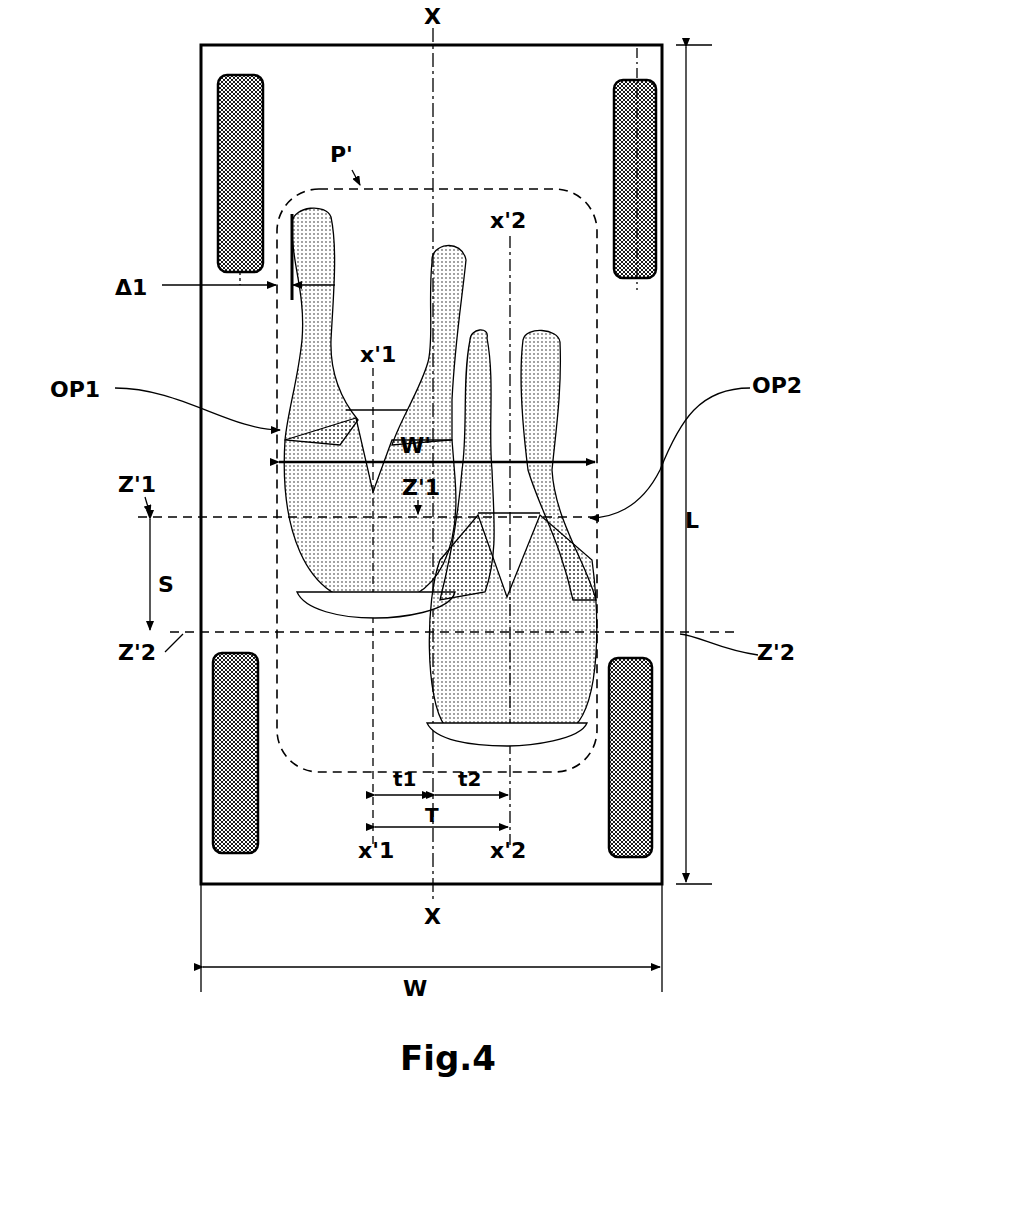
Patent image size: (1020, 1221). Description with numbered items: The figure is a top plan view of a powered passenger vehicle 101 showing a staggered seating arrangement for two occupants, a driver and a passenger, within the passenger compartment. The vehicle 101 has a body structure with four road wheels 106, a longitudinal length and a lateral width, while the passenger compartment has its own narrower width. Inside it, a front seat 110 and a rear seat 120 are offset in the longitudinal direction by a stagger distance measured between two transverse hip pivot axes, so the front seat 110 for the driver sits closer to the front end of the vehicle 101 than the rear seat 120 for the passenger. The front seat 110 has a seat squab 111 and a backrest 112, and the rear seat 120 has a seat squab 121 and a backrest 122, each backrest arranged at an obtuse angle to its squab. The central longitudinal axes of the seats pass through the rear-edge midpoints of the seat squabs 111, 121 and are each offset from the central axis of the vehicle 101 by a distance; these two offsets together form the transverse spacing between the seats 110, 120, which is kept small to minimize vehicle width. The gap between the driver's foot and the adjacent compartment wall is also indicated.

The powered passenger vehicle 101 is at (196, 123).
The road wheels 106 is at (222, 190).
The front seat 110 is at (293, 436).
The seat squab 111 is at (346, 410).
The backrest 112 is at (325, 618).
The rear seat 120 is at (498, 536).
The seat squab 121 is at (497, 512).
The backrest 122 is at (430, 730).